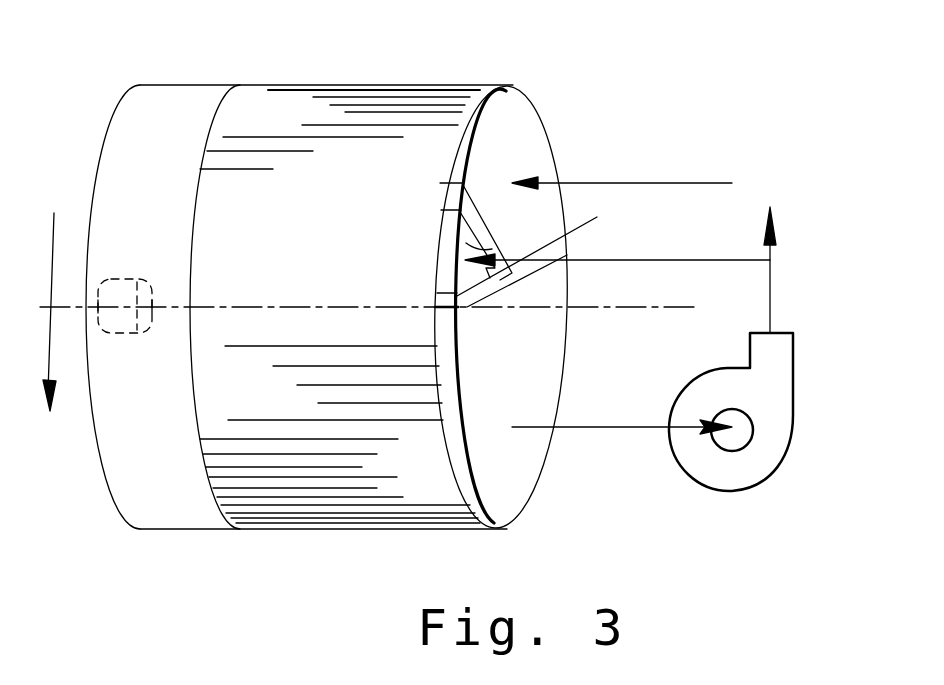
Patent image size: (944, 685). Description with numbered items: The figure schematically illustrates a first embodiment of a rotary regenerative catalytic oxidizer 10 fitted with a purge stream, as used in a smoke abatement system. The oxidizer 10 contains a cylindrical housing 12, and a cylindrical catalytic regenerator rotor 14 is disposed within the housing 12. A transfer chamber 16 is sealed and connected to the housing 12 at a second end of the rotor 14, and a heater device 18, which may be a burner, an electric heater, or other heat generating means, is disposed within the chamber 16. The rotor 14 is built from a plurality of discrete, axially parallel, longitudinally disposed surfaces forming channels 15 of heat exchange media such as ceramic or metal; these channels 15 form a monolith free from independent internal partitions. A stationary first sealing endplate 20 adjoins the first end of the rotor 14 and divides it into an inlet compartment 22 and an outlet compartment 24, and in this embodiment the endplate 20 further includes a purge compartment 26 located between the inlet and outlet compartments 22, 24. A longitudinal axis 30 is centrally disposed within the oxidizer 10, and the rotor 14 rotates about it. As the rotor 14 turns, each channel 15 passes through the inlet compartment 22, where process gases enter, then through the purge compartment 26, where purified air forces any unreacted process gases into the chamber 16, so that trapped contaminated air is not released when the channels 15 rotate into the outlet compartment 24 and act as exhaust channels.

The rotary regenerative catalytic oxidizer 10 is at (593, 75).
The cylindrical housing 12 is at (262, 529).
The cylindrical catalytic regenerator rotor 14 is at (332, 508).
The channels 15 is at (353, 95).
The transfer chamber 16 is at (128, 486).
The heater device 18 is at (137, 276).
The first sealing endplate 20 is at (558, 266).
The inlet compartment 22 is at (524, 136).
The outlet compartment 24 is at (517, 488).
The purge compartment 26 is at (597, 217).
The longitudinal axis 30 is at (622, 312).